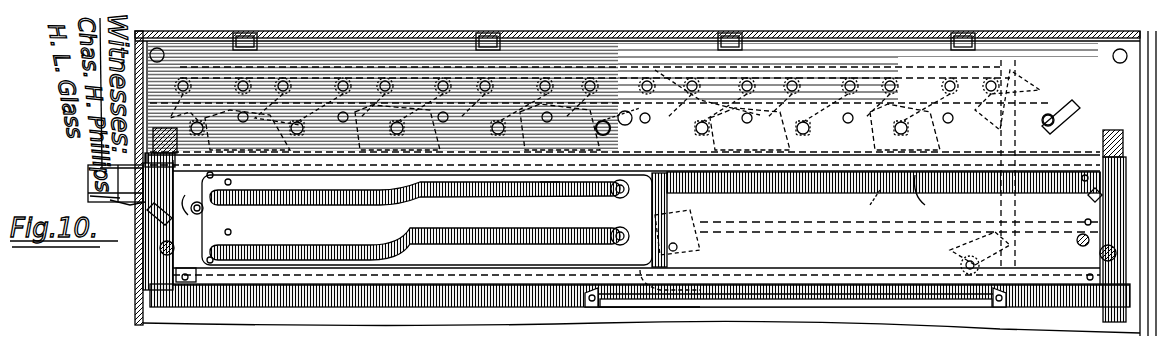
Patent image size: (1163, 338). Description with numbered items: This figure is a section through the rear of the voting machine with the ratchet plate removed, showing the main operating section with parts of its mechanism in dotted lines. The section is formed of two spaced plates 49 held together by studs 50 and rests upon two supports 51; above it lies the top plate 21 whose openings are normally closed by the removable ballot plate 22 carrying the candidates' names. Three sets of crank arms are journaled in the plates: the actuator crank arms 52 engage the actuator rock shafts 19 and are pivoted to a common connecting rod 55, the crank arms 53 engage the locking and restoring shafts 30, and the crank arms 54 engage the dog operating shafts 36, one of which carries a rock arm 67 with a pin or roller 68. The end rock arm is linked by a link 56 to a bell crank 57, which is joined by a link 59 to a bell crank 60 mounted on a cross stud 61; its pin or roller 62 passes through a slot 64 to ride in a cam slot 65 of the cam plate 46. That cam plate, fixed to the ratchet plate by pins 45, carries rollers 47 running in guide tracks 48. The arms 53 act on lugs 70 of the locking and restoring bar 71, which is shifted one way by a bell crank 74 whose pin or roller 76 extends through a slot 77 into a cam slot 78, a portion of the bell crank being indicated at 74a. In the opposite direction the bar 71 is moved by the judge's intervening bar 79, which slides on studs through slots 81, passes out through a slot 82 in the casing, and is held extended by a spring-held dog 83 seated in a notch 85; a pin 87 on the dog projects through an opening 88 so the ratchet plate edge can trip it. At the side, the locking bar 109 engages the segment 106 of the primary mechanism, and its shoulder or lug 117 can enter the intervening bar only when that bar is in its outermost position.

The actuator rock shafts 19 is at (487, 84).
The top plate 21 is at (560, 32).
The ballot plate 22 is at (390, 31).
The locking and restoring shafts 30 is at (247, 122).
The dog operating shafts 36 is at (303, 133).
The pins 45 is at (234, 233).
The cam plate 46 is at (415, 245).
The rollers 47 is at (238, 182).
The guide tracks 48 is at (928, 195).
The plates 49 is at (872, 252).
The studs 50 is at (1114, 60).
The supports 51 is at (1113, 130).
The actuator crank arms 52 is at (342, 75).
The crank arms 53 is at (572, 128).
The crank arms 54 is at (623, 123).
The connecting rod 55 is at (658, 70).
The link 56 is at (1040, 126).
The bell crank 57 is at (975, 252).
The link 59 is at (825, 305).
The bell crank 60 is at (612, 305).
The cross stud 61 is at (555, 200).
The pin or roller 62 is at (612, 196).
The slot 64 is at (649, 220).
The cam slot 65 is at (435, 204).
The rock arm 67 is at (620, 112).
The pin or roller 68 is at (626, 108).
The lugs 70 is at (728, 152).
The locking and restoring bar 71 is at (887, 203).
The bell crank 74 is at (710, 214).
The rod stud 74a is at (678, 249).
The pin or roller 76 is at (612, 242).
The slot 77 is at (665, 280).
The cam slot 78 is at (408, 240).
The intervening bar 79 is at (90, 172).
The slots 81 is at (115, 183).
The slot 82 is at (79, 195).
The dog 83 is at (191, 215).
The notch 85 is at (125, 203).
The pin 87 is at (204, 210).
The opening 88 is at (205, 178).
The segment 106 is at (168, 238).
The locking bar 109 is at (140, 245).
The shoulder or lug 117 is at (119, 165).